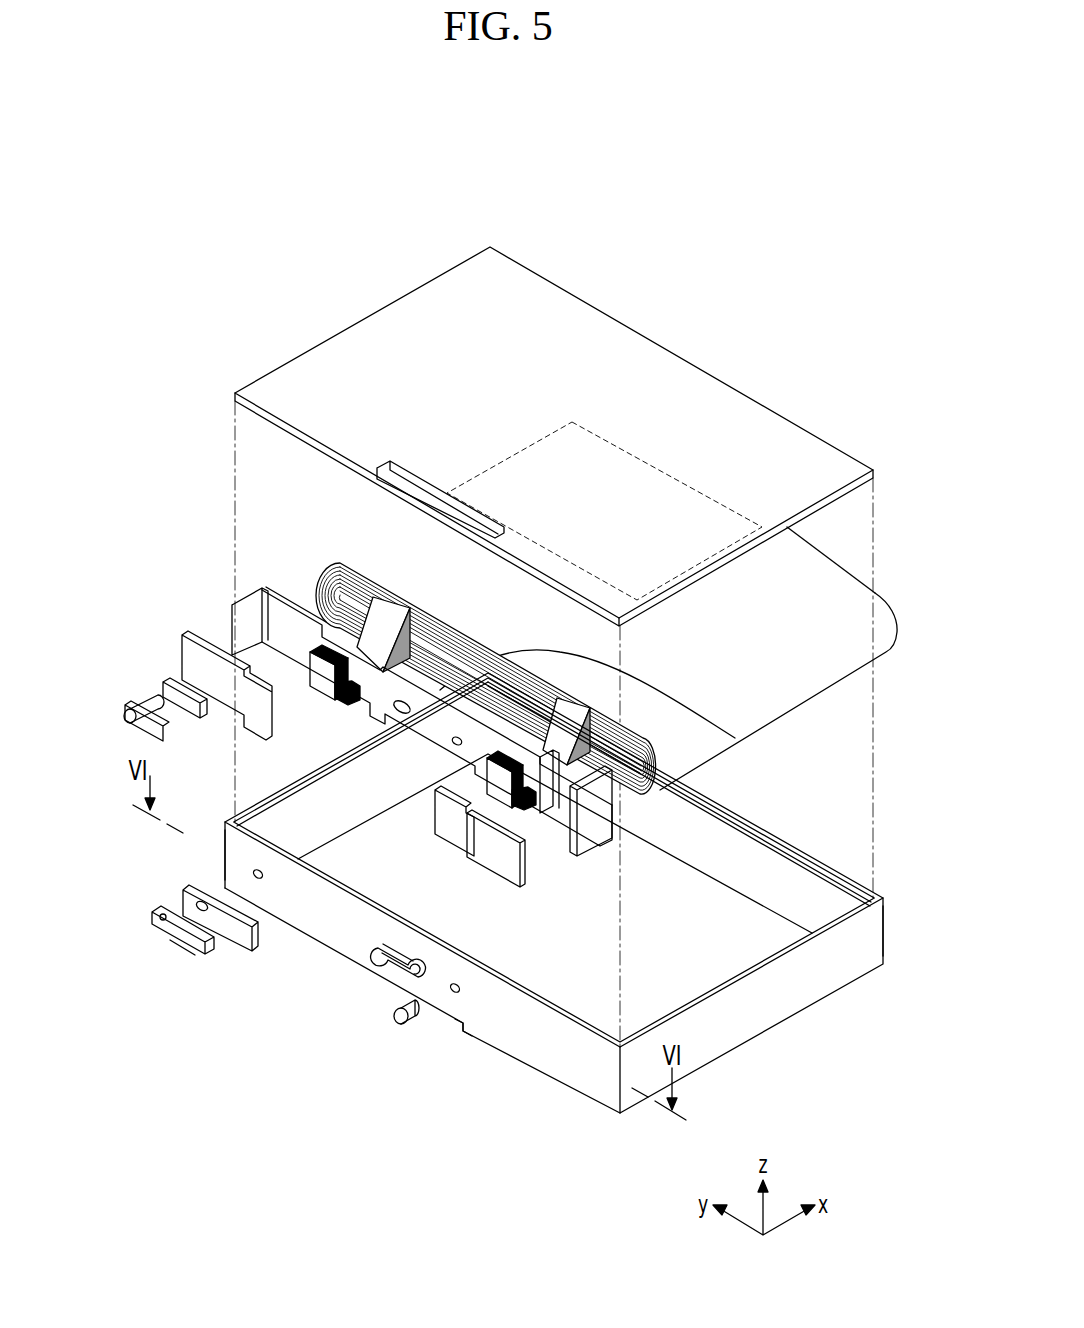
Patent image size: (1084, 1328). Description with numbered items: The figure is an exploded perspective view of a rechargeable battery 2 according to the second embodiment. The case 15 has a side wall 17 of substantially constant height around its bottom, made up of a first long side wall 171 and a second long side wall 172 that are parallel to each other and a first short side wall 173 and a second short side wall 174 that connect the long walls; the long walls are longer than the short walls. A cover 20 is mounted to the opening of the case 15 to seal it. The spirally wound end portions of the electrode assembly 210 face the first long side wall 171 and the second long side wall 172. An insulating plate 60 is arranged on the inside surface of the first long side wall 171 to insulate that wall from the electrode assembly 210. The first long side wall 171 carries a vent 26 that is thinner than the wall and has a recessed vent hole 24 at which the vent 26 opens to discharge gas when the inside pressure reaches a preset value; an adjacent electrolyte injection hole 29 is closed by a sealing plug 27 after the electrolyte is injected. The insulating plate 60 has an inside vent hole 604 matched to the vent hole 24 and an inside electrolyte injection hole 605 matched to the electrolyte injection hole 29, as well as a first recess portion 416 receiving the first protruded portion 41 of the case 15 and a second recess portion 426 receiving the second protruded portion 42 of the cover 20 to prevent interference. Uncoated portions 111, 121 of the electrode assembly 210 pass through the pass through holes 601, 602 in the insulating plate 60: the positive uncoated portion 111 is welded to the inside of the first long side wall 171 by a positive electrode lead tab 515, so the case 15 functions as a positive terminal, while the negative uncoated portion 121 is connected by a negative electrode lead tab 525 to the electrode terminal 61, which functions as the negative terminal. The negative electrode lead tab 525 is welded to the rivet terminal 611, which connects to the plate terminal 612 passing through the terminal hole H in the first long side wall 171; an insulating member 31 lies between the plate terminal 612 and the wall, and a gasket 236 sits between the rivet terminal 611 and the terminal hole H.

The rechargeable battery 2 is at (354, 225).
The cover 20 is at (668, 383).
The second protruded portion 42 is at (402, 464).
The electrode assembly 210 is at (836, 560).
The first recess portion 416 is at (735, 738).
The second recess portion 426 is at (372, 576).
The uncoated portion of the negative electrode 121 is at (308, 648).
The inside vent hole 604 is at (403, 714).
The inside electrolyte injection hole 605 is at (455, 748).
The pass through hole 602 is at (350, 700).
The pass through hole 601 is at (512, 800).
The uncoated portion of the positive electrode 111 is at (475, 840).
The positive electrode lead tab 515 is at (498, 862).
The insulating plate 60 is at (588, 832).
The negative electrode lead tab 525 is at (211, 648).
The gasket 236 is at (125, 702).
The rivet terminal 611 is at (174, 707).
The plate terminal 612 is at (153, 910).
The electrode terminal 61 is at (179, 957).
The case 15 is at (766, 1038).
The first long side wall 171 is at (322, 920).
The second long side wall 172 is at (782, 830).
The first short side wall 173 is at (812, 982).
The second short side wall 174 is at (330, 768).
The side wall 17 is at (169, 350).
The insulating member 31 is at (192, 884).
The terminal hole H is at (254, 874).
The vent 26 is at (376, 950).
The vent hole 24 is at (404, 968).
The sealing plug 27 is at (395, 1020).
The electrolyte injection hole 29 is at (453, 995).
The first protruded portion 41 is at (466, 1033).